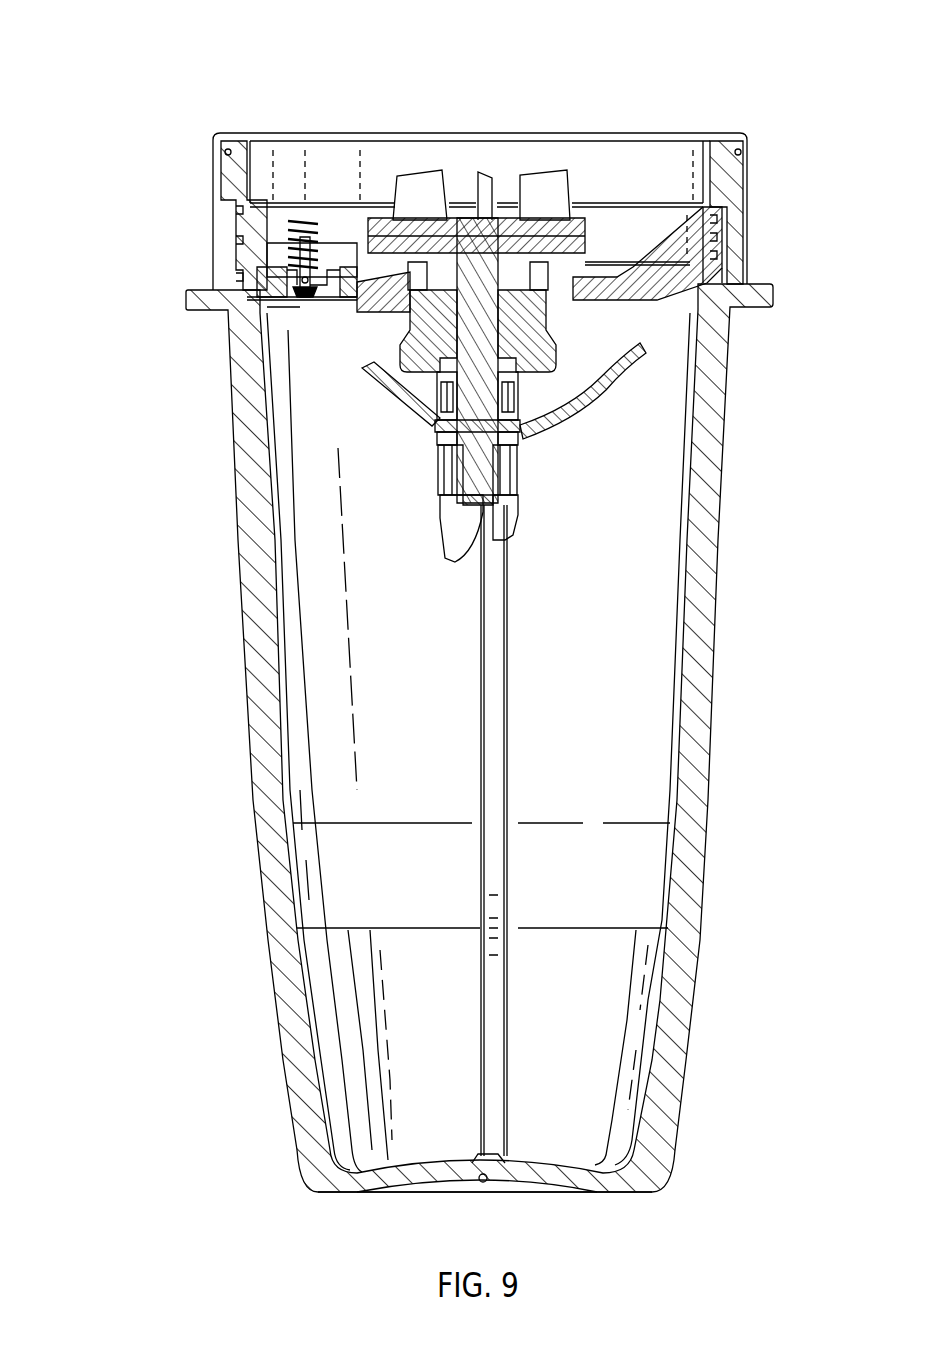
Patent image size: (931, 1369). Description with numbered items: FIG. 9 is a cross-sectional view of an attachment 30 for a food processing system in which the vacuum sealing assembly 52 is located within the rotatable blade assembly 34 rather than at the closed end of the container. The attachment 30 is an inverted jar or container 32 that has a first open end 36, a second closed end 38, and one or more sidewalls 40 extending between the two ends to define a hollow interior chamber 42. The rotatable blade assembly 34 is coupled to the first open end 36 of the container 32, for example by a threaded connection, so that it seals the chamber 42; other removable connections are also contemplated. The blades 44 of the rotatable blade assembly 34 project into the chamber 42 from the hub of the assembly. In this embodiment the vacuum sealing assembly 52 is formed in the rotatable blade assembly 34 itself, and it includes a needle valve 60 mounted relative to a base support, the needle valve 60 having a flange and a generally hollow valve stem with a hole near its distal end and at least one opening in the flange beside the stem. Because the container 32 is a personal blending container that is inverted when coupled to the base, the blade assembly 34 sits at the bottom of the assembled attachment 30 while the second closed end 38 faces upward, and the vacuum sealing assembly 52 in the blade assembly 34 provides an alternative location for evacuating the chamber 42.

The attachment 30 is at (118, 100).
The container 32 is at (714, 699).
The rotatable blade assembly 34 is at (511, 229).
The first open end 36 is at (678, 305).
The second closed end 38 is at (562, 1193).
The sidewall 40 is at (257, 665).
The interior chamber 42 is at (411, 783).
The blade 44 is at (372, 397).
The vacuum sealing assembly 52 is at (249, 191).
The needle valve 60 is at (305, 242).